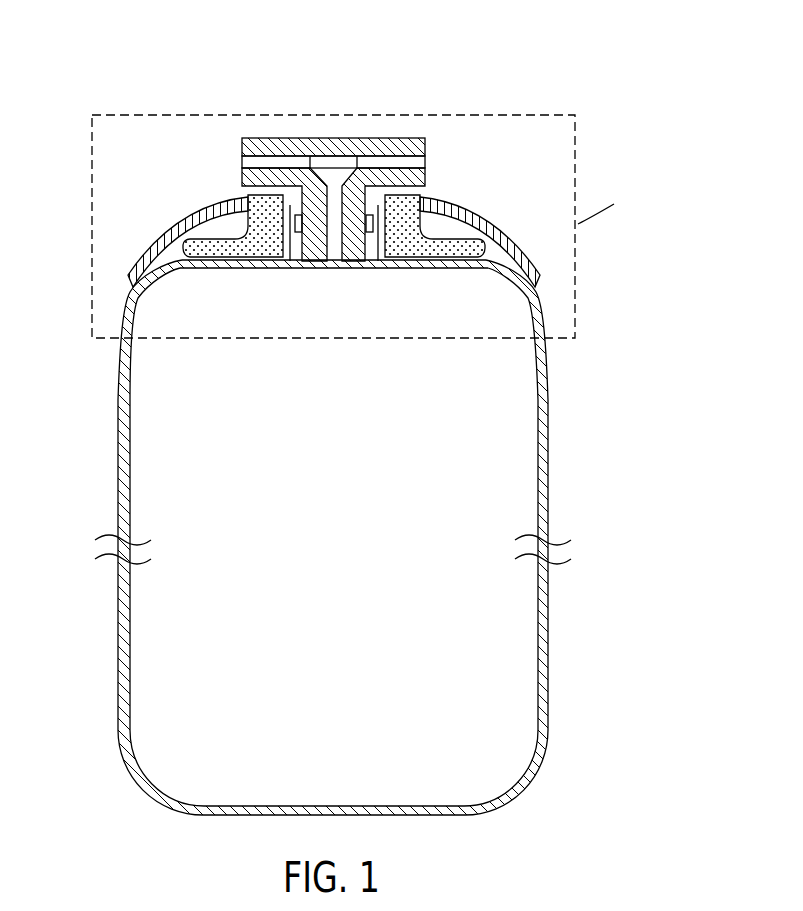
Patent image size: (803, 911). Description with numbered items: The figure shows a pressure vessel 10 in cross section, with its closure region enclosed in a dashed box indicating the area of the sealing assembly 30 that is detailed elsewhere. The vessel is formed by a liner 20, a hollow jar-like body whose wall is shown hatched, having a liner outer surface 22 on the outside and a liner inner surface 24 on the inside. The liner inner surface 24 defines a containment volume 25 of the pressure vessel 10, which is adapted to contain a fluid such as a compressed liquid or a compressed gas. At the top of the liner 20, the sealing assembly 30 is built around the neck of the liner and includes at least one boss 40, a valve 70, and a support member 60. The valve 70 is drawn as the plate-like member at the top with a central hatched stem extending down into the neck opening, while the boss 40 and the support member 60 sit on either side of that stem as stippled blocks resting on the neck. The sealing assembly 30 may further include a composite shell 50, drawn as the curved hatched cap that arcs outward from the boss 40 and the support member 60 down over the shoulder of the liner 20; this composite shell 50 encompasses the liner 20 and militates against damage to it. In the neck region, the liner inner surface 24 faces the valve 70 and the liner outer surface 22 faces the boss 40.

The pressure vessel 10 is at (547, 69).
The liner 20 is at (324, 537).
The liner outer surface 22 is at (117, 497).
The liner inner surface 24 is at (132, 413).
The containment volume 25 is at (344, 503).
The sealing assembly 30 is at (57, 138).
The boss 40 is at (258, 200).
The composite shell 50 is at (186, 243).
The support member 60 is at (397, 193).
The valve 70 is at (415, 151).